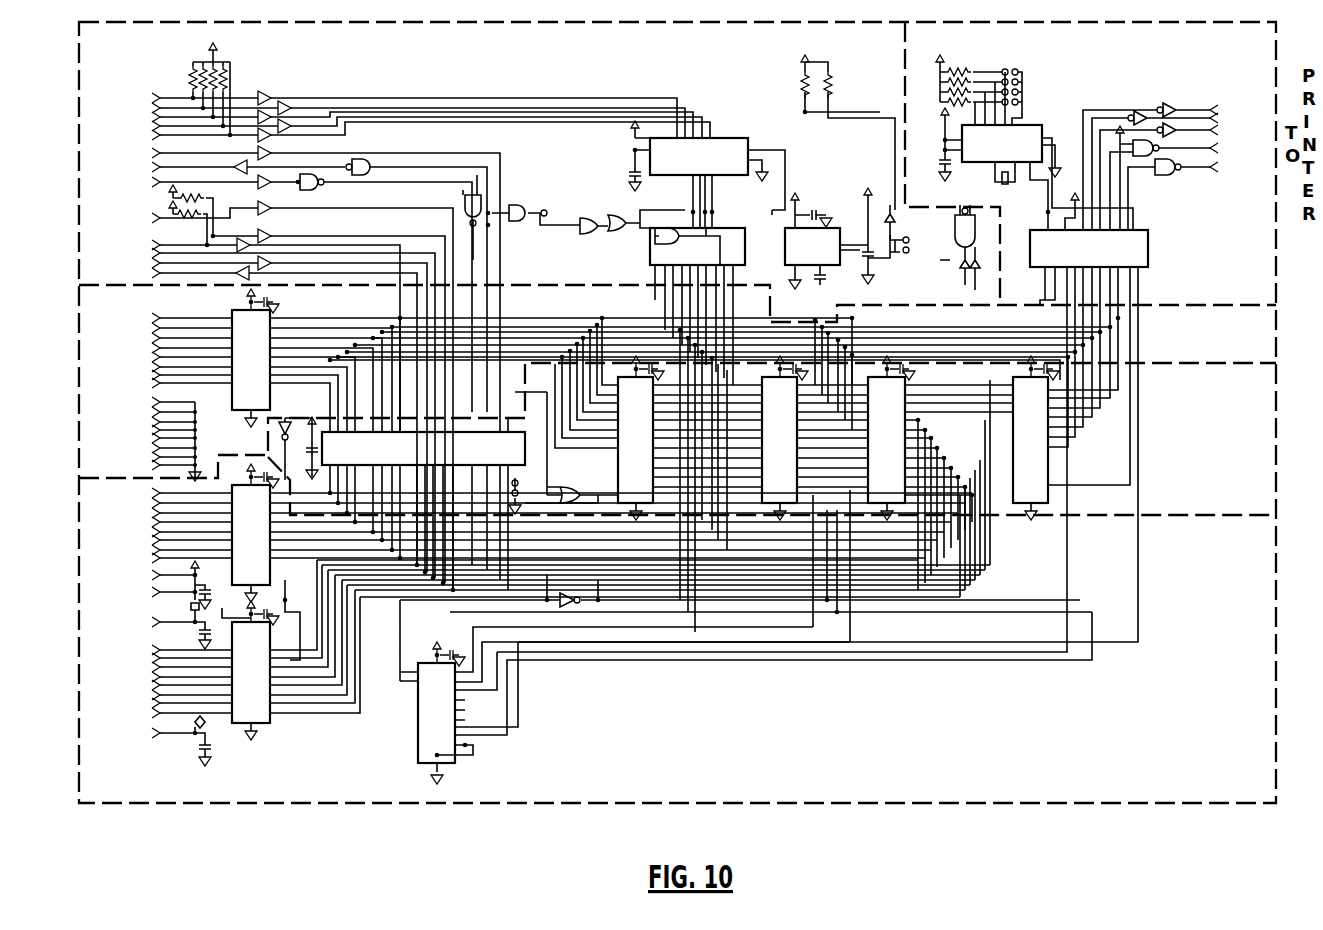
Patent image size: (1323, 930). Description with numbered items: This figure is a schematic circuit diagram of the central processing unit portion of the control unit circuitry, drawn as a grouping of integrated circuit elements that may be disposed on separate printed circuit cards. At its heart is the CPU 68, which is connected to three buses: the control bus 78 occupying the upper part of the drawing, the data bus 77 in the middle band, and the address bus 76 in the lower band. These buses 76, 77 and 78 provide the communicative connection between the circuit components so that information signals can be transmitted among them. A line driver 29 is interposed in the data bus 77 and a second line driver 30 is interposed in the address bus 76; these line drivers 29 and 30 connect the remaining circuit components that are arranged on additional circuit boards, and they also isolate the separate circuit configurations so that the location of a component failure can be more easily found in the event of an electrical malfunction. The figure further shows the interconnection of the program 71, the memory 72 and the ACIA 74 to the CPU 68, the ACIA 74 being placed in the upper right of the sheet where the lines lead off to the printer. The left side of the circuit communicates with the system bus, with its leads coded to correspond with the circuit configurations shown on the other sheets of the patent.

The control bus 78 is at (677, 316).
The data bus 77 is at (677, 472).
The address bus 76 is at (589, 582).
The ACIA 74 is at (878, 337).
The line driver 29 is at (317, 360).
The line driver 30 is at (258, 602).
The CPU 68 is at (423, 505).
The program 71 is at (713, 438).
The memory 72 is at (963, 438).